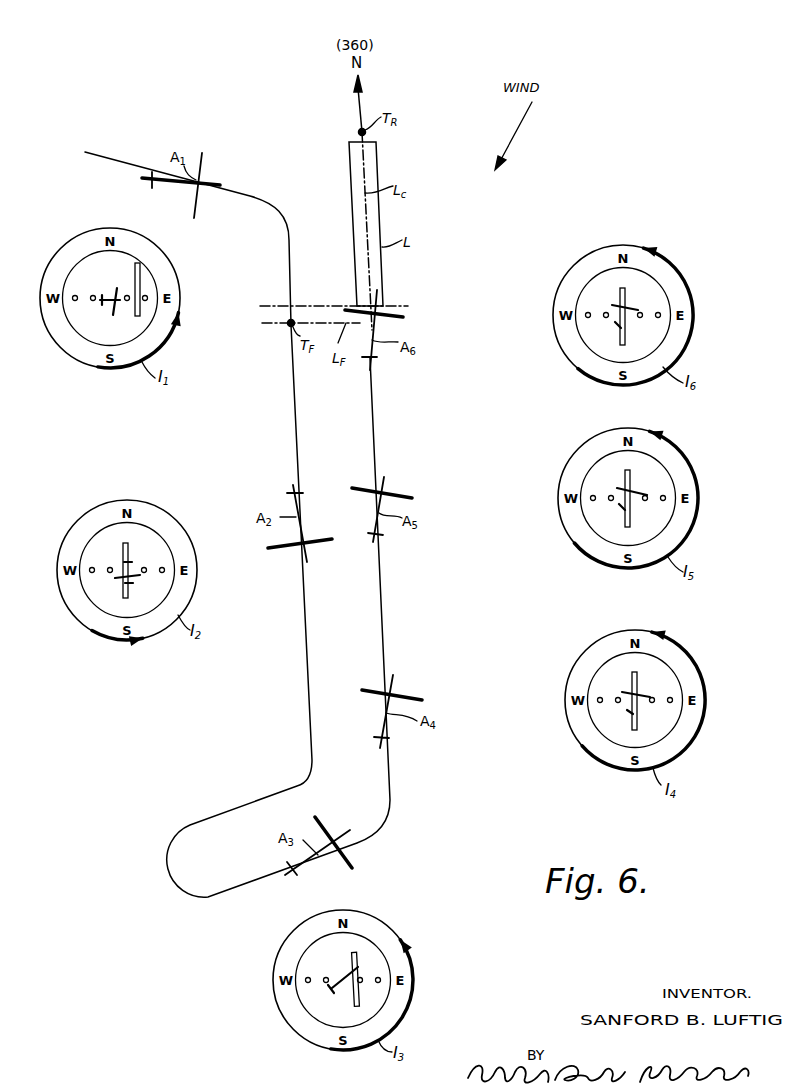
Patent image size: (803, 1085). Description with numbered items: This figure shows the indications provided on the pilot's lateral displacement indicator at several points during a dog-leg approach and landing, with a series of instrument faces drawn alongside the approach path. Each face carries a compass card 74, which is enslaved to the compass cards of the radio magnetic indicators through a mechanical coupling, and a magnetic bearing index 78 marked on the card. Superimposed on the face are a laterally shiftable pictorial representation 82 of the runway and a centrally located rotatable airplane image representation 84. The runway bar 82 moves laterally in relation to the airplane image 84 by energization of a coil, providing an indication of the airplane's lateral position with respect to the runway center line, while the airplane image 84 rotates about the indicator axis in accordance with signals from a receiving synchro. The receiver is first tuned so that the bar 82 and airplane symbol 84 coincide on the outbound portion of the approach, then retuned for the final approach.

The compass card 74 is at (371, 639).
The magnetic bearing index 78 is at (398, 637).
The pictorial representation of a runway 82 is at (422, 636).
The airplane image representation 84 is at (382, 677).